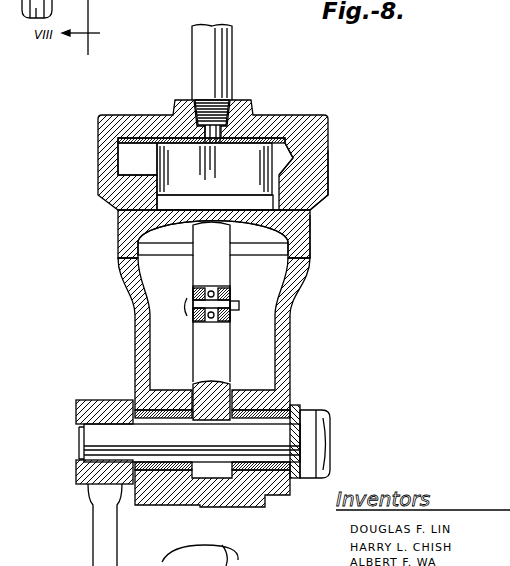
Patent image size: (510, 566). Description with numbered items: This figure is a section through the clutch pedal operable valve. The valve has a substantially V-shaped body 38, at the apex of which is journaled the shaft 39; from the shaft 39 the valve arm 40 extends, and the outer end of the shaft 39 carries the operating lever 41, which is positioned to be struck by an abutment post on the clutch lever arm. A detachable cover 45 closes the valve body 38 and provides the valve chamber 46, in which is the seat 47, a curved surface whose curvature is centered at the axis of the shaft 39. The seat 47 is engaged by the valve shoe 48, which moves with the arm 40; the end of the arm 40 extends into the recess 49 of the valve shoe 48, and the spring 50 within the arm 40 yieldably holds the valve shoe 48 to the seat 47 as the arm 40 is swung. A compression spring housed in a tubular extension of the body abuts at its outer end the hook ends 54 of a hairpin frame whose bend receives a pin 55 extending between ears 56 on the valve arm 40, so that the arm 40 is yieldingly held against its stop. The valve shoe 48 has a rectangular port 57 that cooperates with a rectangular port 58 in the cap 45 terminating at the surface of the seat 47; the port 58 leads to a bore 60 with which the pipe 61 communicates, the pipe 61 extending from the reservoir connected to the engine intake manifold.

The valve body 38 is at (284, 360).
The shaft 39 is at (178, 452).
The valve arm 40 is at (214, 372).
The operating lever 41 is at (95, 505).
The detachable cover 45 is at (328, 140).
The valve chamber 46 is at (314, 218).
The seat 47 is at (305, 170).
The valve shoe 48 is at (303, 241).
The recess 49 is at (246, 234).
The spring 50 is at (193, 230).
The hook ends 54 is at (208, 322).
The pin 55 is at (240, 305).
The ears 56 is at (222, 288).
The rectangular port 57 is at (226, 207).
The rectangular port 58 is at (160, 182).
The bore 60 is at (130, 152).
The pipe 61 is at (215, 72).